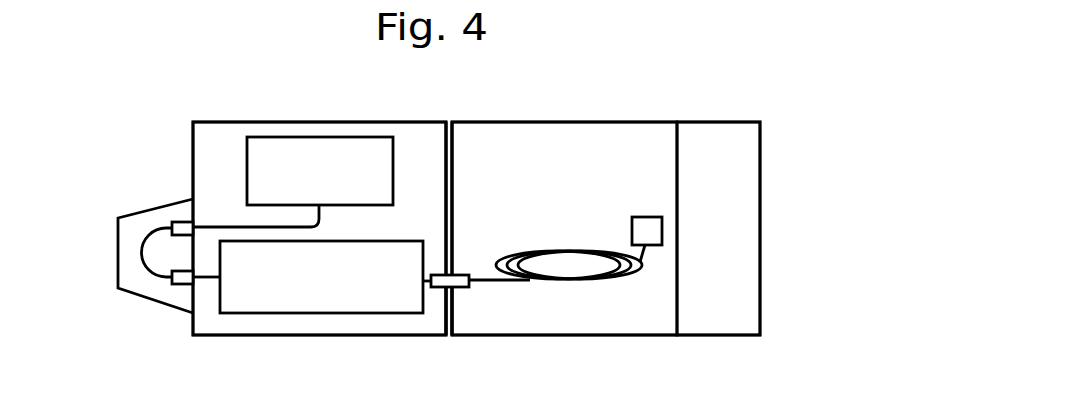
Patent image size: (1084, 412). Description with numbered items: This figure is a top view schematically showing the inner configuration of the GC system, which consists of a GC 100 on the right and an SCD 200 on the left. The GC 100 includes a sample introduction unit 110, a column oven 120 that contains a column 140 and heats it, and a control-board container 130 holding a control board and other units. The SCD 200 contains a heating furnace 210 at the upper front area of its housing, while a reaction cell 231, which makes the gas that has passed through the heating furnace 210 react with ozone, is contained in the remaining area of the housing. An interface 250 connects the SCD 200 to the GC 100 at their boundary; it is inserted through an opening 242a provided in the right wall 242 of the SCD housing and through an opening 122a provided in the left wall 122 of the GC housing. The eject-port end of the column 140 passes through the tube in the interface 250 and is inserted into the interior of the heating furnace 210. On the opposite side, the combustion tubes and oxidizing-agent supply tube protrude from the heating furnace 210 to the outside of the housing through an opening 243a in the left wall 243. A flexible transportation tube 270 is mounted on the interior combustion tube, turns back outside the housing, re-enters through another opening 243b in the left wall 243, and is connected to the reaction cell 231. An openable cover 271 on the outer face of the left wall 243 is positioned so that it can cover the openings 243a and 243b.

The GC 100 is at (792, 174).
The sample introduction unit 110 is at (645, 217).
The column oven 120 is at (605, 133).
The left wall 122 is at (455, 128).
The opening 122a is at (457, 292).
The control-board container 130 is at (728, 132).
The column 140 is at (566, 251).
The SCD 200 is at (140, 105).
The heating furnace 210 is at (285, 313).
The reaction cell 231 is at (326, 137).
The right wall 242 is at (444, 128).
The opening 242a is at (443, 292).
The left wall 243 is at (193, 170).
The opening 243a is at (191, 288).
The opening 243b is at (191, 217).
The interface 250 is at (436, 274).
The transportation tube 270 is at (142, 265).
The cover 271 is at (118, 231).